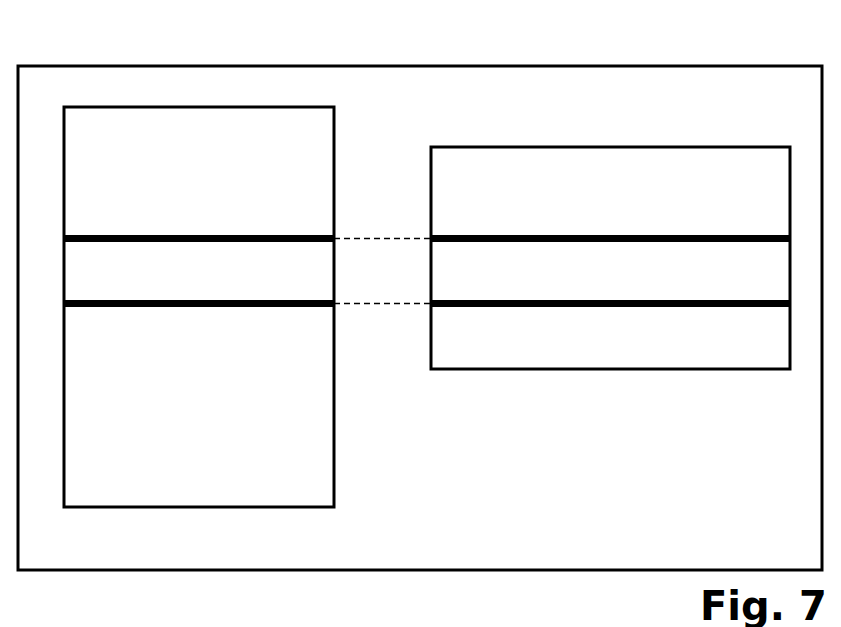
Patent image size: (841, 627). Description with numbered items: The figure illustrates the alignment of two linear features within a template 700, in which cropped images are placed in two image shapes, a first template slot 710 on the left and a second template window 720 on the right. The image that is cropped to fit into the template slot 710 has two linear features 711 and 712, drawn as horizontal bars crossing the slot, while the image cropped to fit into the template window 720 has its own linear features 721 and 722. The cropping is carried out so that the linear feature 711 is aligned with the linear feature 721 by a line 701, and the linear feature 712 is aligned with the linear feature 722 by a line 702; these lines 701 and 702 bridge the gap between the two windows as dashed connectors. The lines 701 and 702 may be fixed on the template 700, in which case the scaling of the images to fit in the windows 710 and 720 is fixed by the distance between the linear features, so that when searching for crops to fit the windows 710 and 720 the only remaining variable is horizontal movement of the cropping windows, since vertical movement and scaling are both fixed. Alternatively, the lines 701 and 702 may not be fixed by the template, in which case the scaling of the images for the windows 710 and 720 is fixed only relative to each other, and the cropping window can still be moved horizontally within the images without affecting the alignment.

The template 700 is at (490, 66).
The image shape 710 is at (203, 107).
The linear feature 711 is at (203, 234).
The linear feature 712 is at (203, 307).
The image shape 720 is at (580, 147).
The linear feature 721 is at (578, 234).
The linear feature 722 is at (578, 307).
The line 701 is at (364, 236).
The line 702 is at (364, 306).